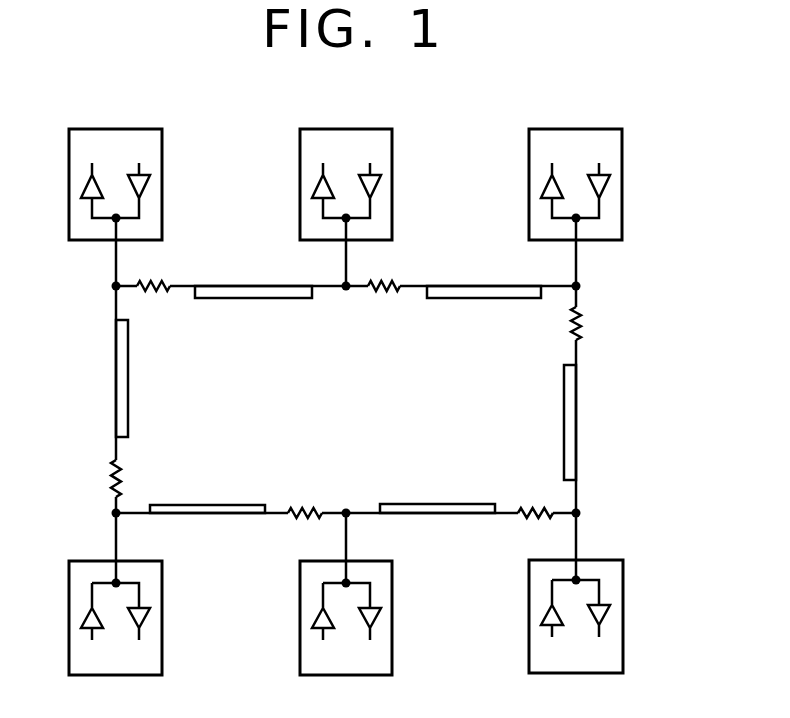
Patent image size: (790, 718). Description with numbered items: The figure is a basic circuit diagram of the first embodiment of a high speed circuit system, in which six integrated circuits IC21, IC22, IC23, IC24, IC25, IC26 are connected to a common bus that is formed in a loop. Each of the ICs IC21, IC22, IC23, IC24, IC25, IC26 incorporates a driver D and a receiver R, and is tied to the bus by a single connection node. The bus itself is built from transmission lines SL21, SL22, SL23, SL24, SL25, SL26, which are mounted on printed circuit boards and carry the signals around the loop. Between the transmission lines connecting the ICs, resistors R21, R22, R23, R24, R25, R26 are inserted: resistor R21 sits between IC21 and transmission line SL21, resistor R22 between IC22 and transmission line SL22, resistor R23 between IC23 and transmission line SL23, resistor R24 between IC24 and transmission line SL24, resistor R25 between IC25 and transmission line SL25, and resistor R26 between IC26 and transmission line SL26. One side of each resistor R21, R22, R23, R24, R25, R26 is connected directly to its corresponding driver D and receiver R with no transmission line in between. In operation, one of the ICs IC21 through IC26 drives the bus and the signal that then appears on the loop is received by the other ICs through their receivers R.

The integrated circuit IC21 is at (163, 152).
The integrated circuit IC22 is at (393, 152).
The integrated circuit IC23 is at (623, 150).
The integrated circuit IC24 is at (624, 650).
The integrated circuit IC25 is at (393, 651).
The integrated circuit IC26 is at (163, 651).
The resistor R21 is at (157, 300).
The resistor R22 is at (387, 300).
The resistor R23 is at (601, 323).
The resistor R24 is at (536, 529).
The resistor R25 is at (307, 529).
The resistor R26 is at (93, 478).
The transmission line SL21 is at (253, 298).
The transmission line SL22 is at (486, 298).
The transmission line SL23 is at (576, 420).
The transmission line SL24 is at (438, 502).
The transmission line SL25 is at (208, 503).
The transmission line SL26 is at (116, 380).